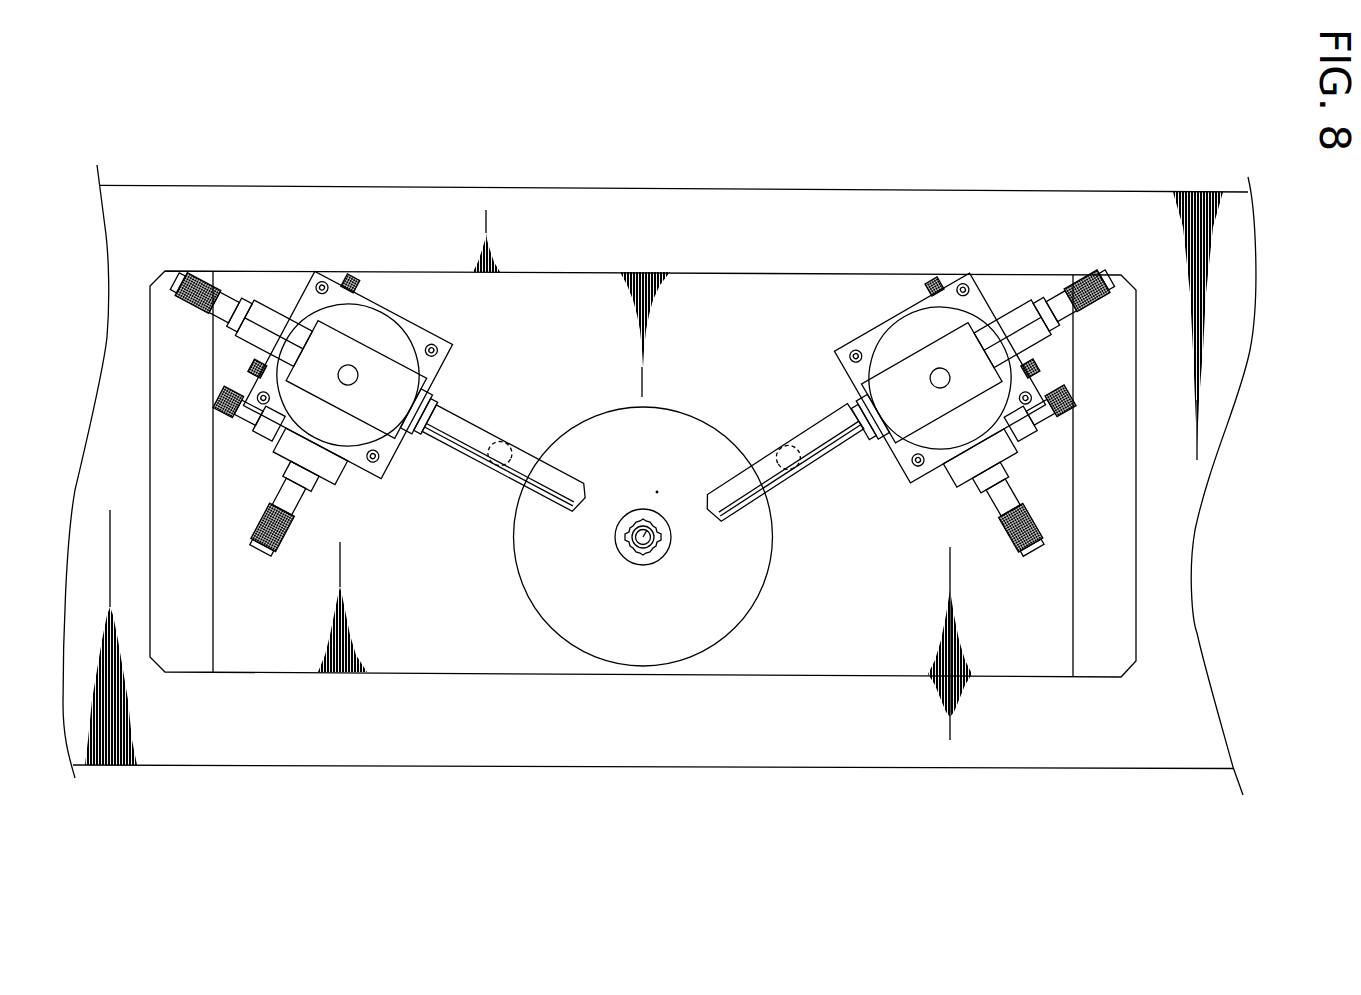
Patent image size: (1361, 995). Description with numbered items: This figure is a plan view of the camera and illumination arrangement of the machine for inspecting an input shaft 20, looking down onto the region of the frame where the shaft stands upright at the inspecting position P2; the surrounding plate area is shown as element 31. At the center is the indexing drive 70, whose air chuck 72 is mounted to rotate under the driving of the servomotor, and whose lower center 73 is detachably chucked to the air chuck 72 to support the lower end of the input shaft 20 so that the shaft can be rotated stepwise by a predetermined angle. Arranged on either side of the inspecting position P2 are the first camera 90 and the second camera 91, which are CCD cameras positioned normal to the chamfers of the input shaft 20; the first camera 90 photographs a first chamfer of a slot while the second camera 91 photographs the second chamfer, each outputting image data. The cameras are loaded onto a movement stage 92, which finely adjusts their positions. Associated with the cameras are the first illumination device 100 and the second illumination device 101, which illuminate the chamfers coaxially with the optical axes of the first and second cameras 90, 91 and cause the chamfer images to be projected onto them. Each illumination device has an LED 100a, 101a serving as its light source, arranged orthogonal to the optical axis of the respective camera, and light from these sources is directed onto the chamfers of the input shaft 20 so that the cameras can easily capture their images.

The input shaft 20 is at (635, 557).
The base plate 31 is at (295, 735).
The indexing drive 70 is at (607, 409).
The air chuck 72 is at (670, 663).
The lower center 73 is at (637, 520).
The first camera 90 is at (378, 370).
The second camera 91 is at (923, 357).
The movement stage 92 is at (312, 287).
The first illumination device 100 is at (336, 472).
The LED 100a is at (505, 470).
The second illumination device 101 is at (952, 486).
The LED 101a is at (795, 470).
The inspecting position P2 is at (657, 492).